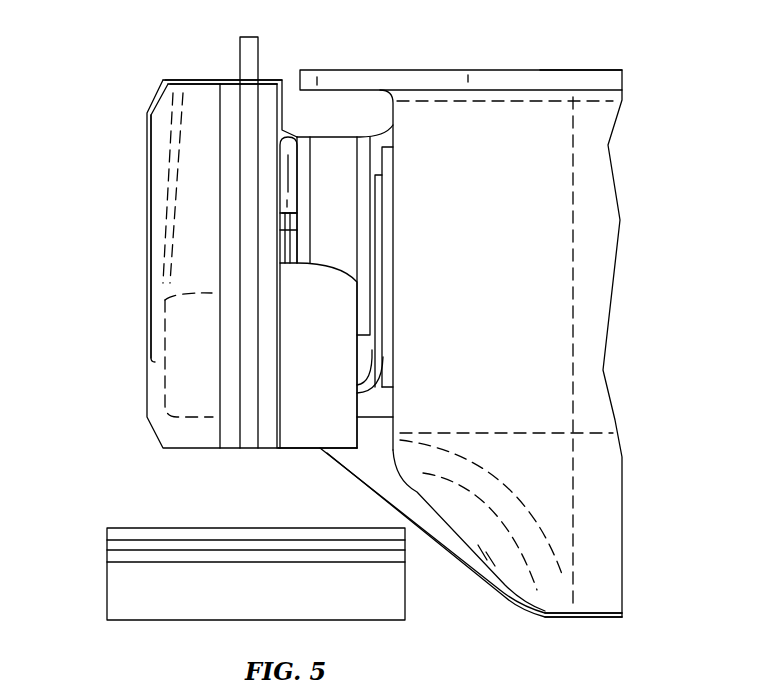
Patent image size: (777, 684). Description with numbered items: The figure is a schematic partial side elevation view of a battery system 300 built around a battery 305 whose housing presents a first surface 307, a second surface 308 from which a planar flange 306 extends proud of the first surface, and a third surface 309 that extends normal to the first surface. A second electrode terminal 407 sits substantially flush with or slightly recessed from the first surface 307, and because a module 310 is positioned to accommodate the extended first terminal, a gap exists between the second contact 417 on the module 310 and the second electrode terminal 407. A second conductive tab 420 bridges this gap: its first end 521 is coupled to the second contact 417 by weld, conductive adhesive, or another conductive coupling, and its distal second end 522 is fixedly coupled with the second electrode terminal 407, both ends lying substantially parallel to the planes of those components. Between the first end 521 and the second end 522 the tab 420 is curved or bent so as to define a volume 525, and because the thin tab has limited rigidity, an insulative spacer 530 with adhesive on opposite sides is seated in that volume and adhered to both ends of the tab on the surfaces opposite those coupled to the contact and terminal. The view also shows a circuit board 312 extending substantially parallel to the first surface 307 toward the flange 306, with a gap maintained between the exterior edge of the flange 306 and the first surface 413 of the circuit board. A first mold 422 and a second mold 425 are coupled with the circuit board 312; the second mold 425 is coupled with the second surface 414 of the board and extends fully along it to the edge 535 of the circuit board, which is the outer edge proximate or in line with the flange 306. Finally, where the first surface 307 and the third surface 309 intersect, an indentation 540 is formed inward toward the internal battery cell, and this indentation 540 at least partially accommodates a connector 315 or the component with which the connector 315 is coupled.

The battery system 300 is at (676, 126).
The battery 305 is at (624, 455).
The flange 306 is at (343, 70).
The first surface 307 is at (390, 118).
The second surface 308 is at (563, 70).
The third surface 309 is at (580, 617).
The module 310 is at (147, 300).
The circuit board 312 is at (247, 450).
The connector 315 is at (107, 600).
The second electrode terminal 407 is at (390, 175).
The first surface of circuit board 413 is at (277, 450).
The second surface of circuit board 414 is at (218, 432).
The second contact 417 is at (277, 232).
The second conductive tab 420 is at (374, 285).
The first mold 422 is at (282, 160).
The second mold 425 is at (147, 378).
The first end 521 is at (279, 215).
The second end 522 is at (377, 180).
The volume 525 is at (373, 352).
The spacer 530 is at (348, 142).
The edge 535 is at (222, 82).
The indentation 540 is at (480, 553).